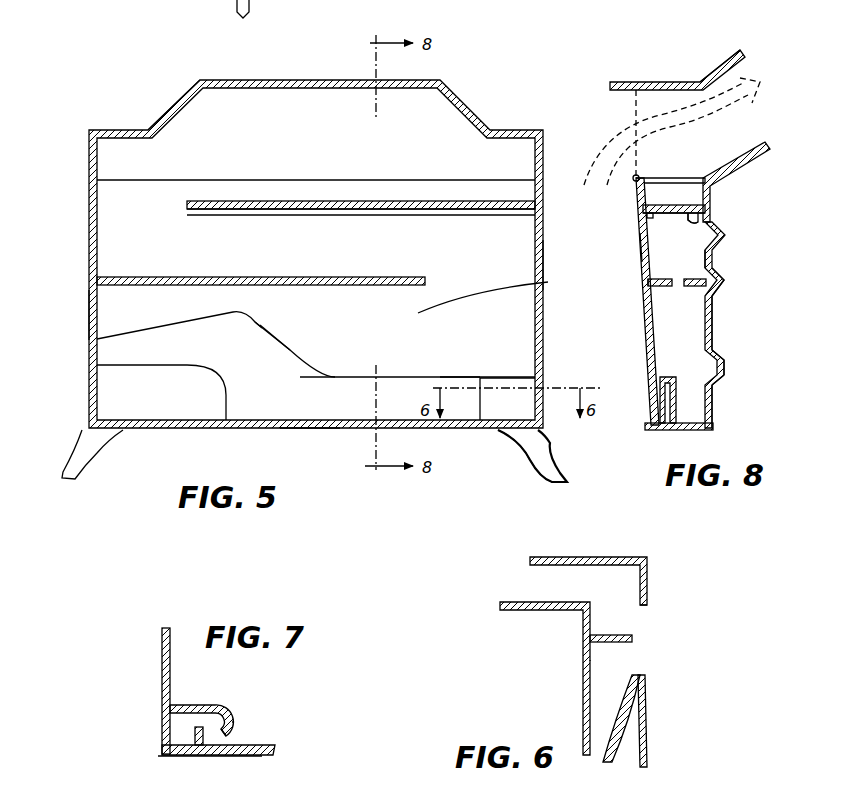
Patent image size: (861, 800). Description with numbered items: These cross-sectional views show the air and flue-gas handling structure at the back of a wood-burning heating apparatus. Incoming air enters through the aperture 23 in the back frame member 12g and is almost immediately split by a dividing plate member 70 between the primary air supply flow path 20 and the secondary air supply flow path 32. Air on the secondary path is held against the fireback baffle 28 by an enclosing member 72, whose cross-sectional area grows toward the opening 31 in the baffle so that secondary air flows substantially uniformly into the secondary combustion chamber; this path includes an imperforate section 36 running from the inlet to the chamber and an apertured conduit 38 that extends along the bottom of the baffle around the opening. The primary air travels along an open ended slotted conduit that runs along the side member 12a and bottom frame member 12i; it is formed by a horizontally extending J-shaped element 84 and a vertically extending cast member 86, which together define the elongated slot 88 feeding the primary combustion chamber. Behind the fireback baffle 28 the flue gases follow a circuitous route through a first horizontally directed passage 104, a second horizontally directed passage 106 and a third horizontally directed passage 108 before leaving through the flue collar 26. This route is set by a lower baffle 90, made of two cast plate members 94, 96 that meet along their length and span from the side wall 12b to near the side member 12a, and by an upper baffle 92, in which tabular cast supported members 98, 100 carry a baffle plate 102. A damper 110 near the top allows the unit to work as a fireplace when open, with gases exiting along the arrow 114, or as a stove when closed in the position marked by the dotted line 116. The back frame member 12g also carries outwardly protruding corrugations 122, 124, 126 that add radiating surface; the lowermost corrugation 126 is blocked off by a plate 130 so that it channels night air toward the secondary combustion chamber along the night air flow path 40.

In FIG. 5, the second horizontally directed passage 106 is at (127, 238).
In FIG. 8, the second horizontally directed passage 106 is at (712, 255).
In FIG. 5, the third horizontally directed passage 108 is at (150, 160).
In FIG. 8, the third horizontally directed passage 108 is at (668, 102).
In FIG. 5, the side member 12a is at (543, 262).
In FIG. 7, the side member 12a is at (163, 667).
In FIG. 5, the side wall 12b is at (88, 290).
In FIG. 5, the frame member 12i is at (312, 434).
In FIG. 7, the frame member 12i is at (228, 757).
In FIG. 8, the back frame member 12g is at (713, 400).
In FIG. 6, the back frame member 12g is at (647, 703).
In FIG. 5, the damper 110 is at (316, 180).
In FIG. 8, the damper 110 is at (660, 178).
In FIG. 5, the baffle plate 102 is at (397, 202).
In FIG. 8, the baffle plate 102 is at (683, 205).
In FIG. 5, the tabular cast supported member 98 is at (462, 216).
In FIG. 8, the tabular cast supported member 98 is at (638, 233).
In FIG. 5, the upper baffle 92 is at (262, 212).
In FIG. 8, the upper baffle 92 is at (676, 218).
In FIG. 5, the cast plate member 94 is at (424, 278).
In FIG. 8, the cast plate member 94 is at (660, 288).
In FIG. 5, the first horizontally directed passage 104 is at (500, 289).
In FIG. 8, the first horizontally directed passage 104 is at (685, 315).
In FIG. 5, the apertured conduit 38 is at (162, 330).
In FIG. 5, the secondary air supply flow path 32 is at (293, 337).
In FIG. 6, the secondary air supply flow path 32 is at (603, 672).
In FIG. 5, the lower baffle 90 is at (278, 312).
In FIG. 8, the lower baffle 90 is at (692, 281).
In FIG. 5, the opening 31 is at (161, 392).
In FIG. 5, the enclosing member 72 is at (296, 380).
In FIG. 8, the enclosing member 72 is at (682, 407).
In FIG. 6, the enclosing member 72 is at (617, 730).
In FIG. 5, the fireback baffle 28 is at (460, 344).
In FIG. 8, the fireback baffle 28 is at (643, 268).
In FIG. 6, the fireback baffle 28 is at (582, 670).
In FIG. 5, the dividing plate member 70 is at (481, 414).
In FIG. 6, the dividing plate member 70 is at (608, 632).
In FIG. 5, the imperforate section 36 is at (361, 405).
In FIG. 8, the flue collar 26 is at (722, 62).
In FIG. 8, the dotted line 116 is at (628, 107).
In FIG. 8, the arrow 114 is at (604, 150).
In FIG. 8, the tabular cast supported member 100 is at (708, 223).
In FIG. 8, the corrugation 122 is at (724, 236).
In FIG. 8, the corrugation 124 is at (726, 290).
In FIG. 8, the cast plate member 96 is at (714, 300).
In FIG. 8, the plate 130 is at (708, 360).
In FIG. 8, the lowermost corrugation 126 is at (722, 362).
In FIG. 8, the night air flow path 40 is at (718, 374).
In FIG. 7, the J-shaped element 84 is at (210, 703).
In FIG. 7, the primary air supply flow path 20 is at (237, 715).
In FIG. 6, the primary air supply flow path 20 is at (588, 581).
In FIG. 7, the elongated slot 88 is at (228, 736).
In FIG. 7, the cast member 86 is at (193, 733).
In FIG. 6, the aperture 23 is at (638, 623).